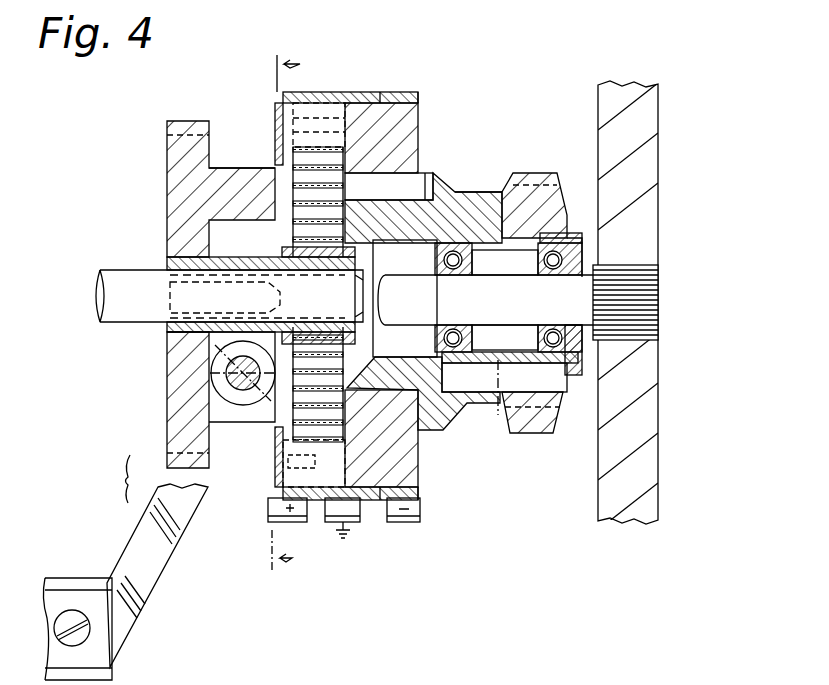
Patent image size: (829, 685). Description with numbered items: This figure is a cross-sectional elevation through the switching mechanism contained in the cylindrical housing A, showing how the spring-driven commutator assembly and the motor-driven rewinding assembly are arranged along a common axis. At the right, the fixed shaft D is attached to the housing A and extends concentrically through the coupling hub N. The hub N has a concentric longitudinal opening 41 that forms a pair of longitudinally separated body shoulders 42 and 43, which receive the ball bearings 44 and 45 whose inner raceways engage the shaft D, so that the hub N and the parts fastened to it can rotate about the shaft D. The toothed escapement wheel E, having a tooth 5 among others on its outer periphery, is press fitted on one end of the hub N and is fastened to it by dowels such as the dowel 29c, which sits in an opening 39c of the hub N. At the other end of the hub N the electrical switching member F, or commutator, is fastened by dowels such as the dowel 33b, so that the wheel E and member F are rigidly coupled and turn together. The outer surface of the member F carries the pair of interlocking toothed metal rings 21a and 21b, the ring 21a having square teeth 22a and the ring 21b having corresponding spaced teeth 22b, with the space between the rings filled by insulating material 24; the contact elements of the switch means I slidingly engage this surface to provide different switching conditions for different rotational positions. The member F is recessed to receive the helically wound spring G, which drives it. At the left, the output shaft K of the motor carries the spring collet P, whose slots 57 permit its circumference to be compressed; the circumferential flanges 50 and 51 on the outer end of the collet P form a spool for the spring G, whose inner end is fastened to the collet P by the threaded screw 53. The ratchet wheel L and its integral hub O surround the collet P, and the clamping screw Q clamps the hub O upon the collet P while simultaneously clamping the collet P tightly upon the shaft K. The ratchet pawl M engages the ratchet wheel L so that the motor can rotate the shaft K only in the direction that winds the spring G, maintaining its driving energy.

The cylindrical housing A is at (656, 106).
The shaft D is at (653, 302).
The concentric longitudinal opening 41 is at (410, 351).
The output shaft K is at (112, 269).
The longitudinally extending slots 57 is at (294, 290).
The ratchet wheel L is at (180, 158).
The hub O is at (232, 168).
The spring collet P is at (168, 351).
The clamping screw Q is at (242, 405).
The circumferential flange 50 is at (286, 256).
The threaded screw 53 is at (288, 232).
The helically wound spring G is at (284, 170).
The square teeth 22a is at (356, 100).
The slip ring 22b is at (362, 501).
The toothed metal ring 21a is at (305, 92).
The toothed metal ring 21b is at (443, 495).
The electrical switching member F is at (424, 126).
The circumferential body shoulder 42 is at (448, 210).
The coupling hub N is at (492, 188).
The circumferential flange 51 is at (358, 262).
The dowel 33b is at (422, 179).
The opening 39c is at (482, 392).
The toothed escapement wheel E is at (545, 206).
The circumferential body shoulder 43 is at (556, 232).
The dowel 29c is at (553, 380).
The bearing 44 is at (478, 264).
The bearing 45 is at (542, 262).
The switch means I is at (262, 510).
The insulating material 24 is at (381, 95).
The tooth 5 is at (293, 314).
The ratchet pawl M is at (162, 556).